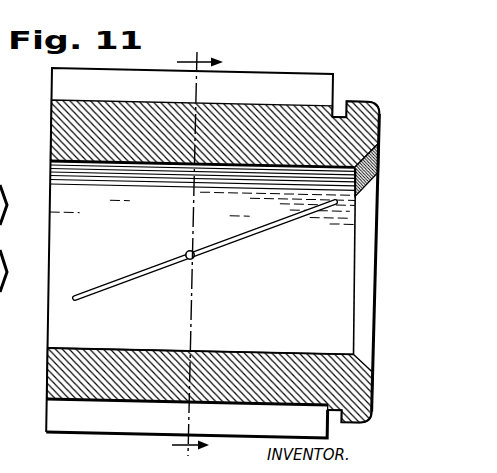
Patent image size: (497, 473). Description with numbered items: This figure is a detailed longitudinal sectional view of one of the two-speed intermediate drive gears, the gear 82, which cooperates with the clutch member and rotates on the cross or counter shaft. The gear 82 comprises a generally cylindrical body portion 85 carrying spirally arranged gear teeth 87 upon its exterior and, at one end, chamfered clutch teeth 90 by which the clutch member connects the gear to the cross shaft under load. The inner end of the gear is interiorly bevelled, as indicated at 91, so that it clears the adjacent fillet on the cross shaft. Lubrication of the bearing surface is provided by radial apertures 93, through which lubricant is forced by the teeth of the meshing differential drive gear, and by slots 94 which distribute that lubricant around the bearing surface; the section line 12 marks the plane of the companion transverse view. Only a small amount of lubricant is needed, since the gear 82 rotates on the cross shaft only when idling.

The section line 12 is at (175, 247).
The gear 82 is at (44, 358).
The cylindrical body portion 85 is at (72, 138).
The spirally arranged gear teeth 87 is at (73, 84).
The chamfered clutch teeth 90 is at (364, 100).
The interior bevel 91 is at (378, 175).
The radial apertures 93 is at (184, 249).
The slots 94 is at (255, 231).